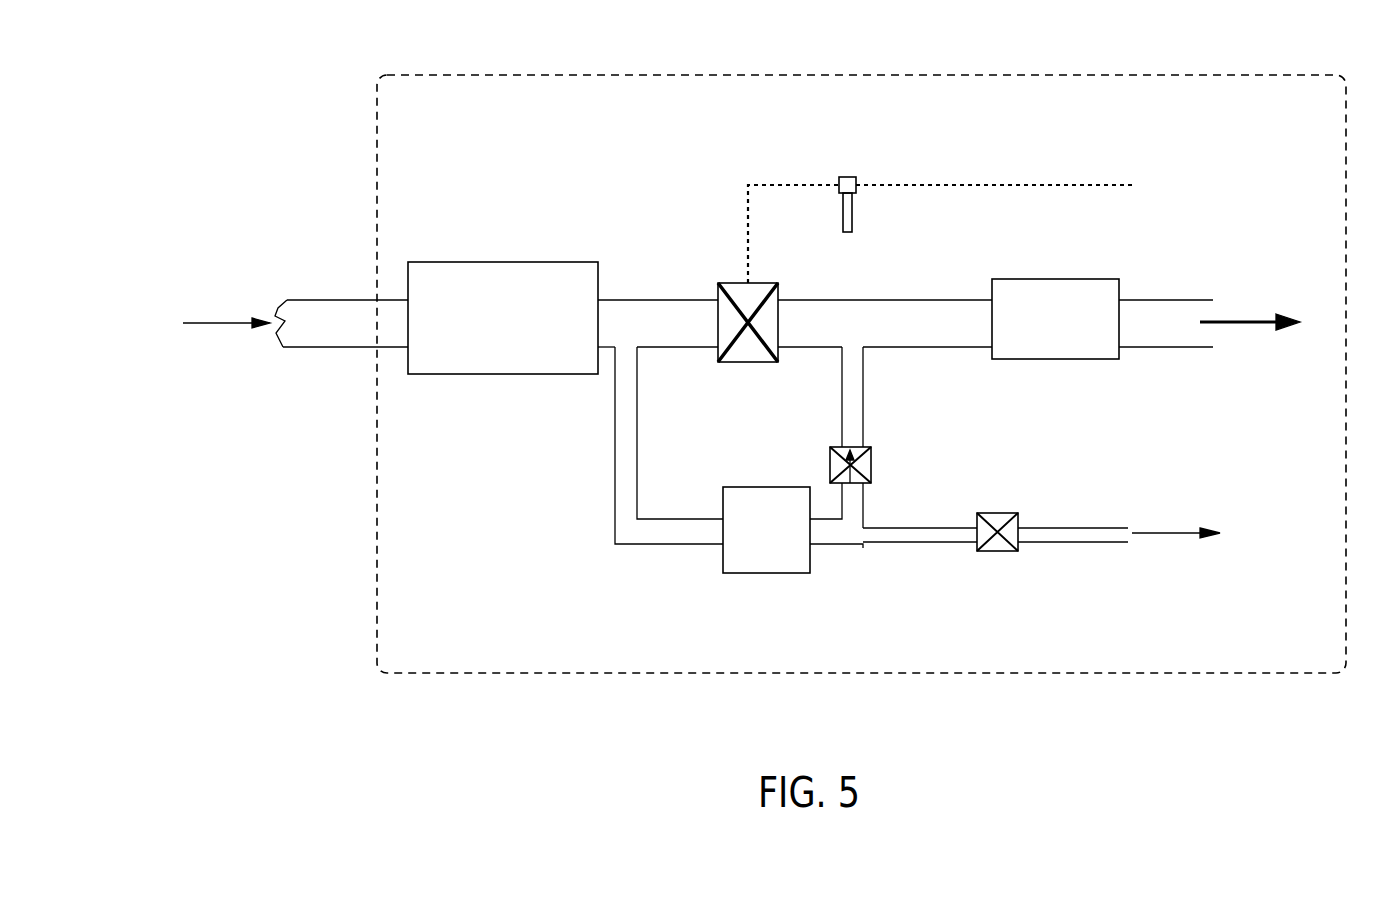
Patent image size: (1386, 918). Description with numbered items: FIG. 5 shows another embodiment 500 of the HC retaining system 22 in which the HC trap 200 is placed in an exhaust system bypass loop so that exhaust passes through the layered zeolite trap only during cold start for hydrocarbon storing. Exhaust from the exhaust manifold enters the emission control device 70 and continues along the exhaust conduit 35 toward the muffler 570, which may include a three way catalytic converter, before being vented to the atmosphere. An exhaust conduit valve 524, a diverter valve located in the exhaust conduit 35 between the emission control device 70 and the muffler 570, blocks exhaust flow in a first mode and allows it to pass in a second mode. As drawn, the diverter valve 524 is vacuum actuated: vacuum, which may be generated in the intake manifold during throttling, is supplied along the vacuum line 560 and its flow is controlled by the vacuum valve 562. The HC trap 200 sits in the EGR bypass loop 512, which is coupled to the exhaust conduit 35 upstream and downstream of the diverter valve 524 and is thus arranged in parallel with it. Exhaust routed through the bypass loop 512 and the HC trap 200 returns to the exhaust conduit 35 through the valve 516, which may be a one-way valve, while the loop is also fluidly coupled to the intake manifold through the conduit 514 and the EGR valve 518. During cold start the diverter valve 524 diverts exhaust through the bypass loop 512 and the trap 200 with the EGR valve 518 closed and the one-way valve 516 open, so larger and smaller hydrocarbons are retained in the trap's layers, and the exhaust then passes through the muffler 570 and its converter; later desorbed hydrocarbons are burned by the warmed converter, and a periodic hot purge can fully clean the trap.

The embodiment of HC retaining system 500 is at (266, 85).
The HC retaining system 22 is at (1093, 75).
The emission control device 70 is at (503, 262).
The exhaust conduit 35 is at (887, 300).
The exhaust conduit valve 524 is at (762, 283).
The vacuum valve 562 is at (852, 177).
The vacuum line 560 is at (1025, 185).
The muffler 570 is at (1056, 279).
The EGR bypass loop 512 is at (842, 420).
The one-way valve 516 is at (866, 447).
The conduit 514 is at (903, 527).
The EGR valve 518 is at (1003, 513).
The HC trap 200 is at (762, 573).